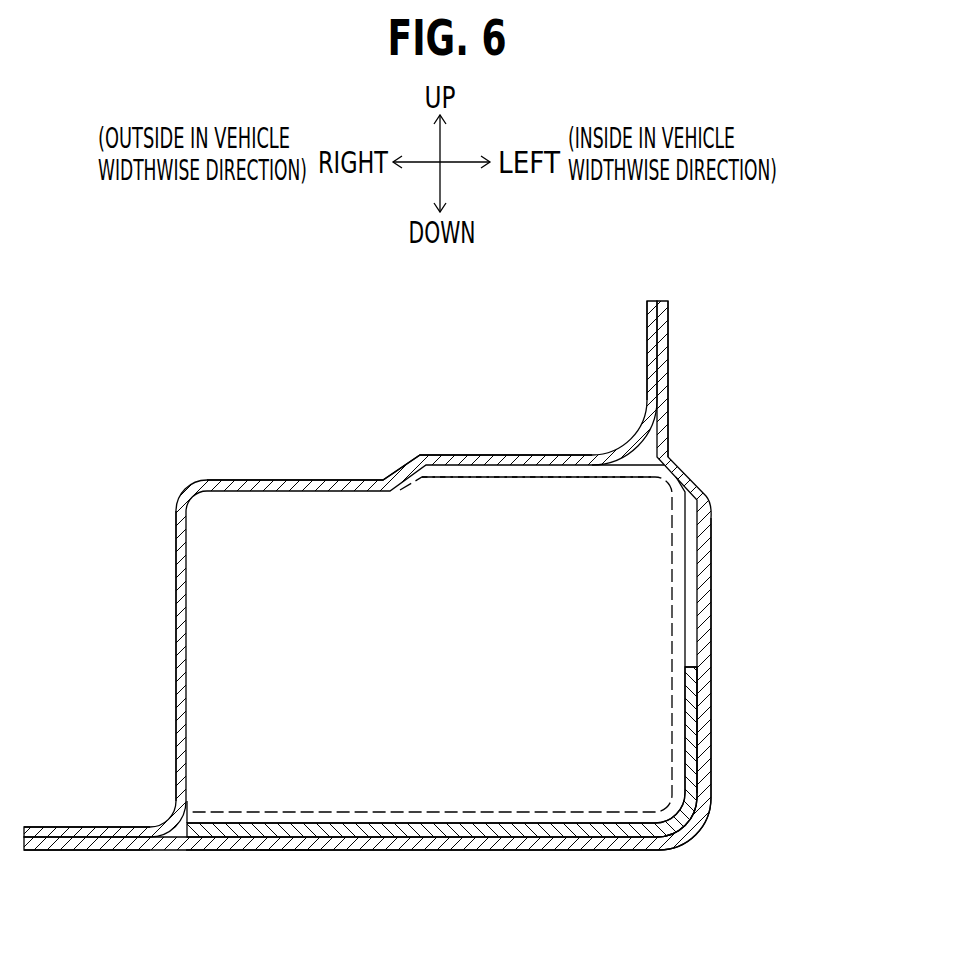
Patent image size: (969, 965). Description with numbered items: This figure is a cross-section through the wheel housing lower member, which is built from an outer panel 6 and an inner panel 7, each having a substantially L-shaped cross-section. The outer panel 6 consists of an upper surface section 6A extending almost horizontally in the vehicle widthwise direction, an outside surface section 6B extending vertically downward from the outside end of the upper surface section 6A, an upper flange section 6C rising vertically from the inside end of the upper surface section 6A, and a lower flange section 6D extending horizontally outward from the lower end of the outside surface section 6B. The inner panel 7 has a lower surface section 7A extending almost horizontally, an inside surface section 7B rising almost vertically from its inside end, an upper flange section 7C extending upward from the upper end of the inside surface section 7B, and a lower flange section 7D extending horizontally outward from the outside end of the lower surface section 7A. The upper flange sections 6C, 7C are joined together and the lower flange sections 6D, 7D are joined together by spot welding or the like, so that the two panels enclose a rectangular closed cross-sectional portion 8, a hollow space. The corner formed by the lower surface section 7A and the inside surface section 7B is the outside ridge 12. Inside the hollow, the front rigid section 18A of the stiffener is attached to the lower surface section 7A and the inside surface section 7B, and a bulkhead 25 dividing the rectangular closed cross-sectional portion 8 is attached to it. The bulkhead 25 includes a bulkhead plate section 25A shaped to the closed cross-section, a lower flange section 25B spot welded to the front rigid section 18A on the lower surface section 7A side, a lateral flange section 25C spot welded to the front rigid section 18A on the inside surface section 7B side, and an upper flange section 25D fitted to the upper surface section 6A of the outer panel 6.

The outer panel 6 is at (238, 420).
The upper surface section 6A is at (512, 455).
The outside surface section 6B is at (176, 605).
The upper flange section 6C is at (647, 333).
The lower flange section 6D is at (88, 827).
The inner panel 7 is at (745, 283).
The lower surface section 7A is at (388, 850).
The inside surface section 7B is at (711, 567).
The upper flange section 7C is at (668, 355).
The lower flange section 7D is at (88, 852).
The rectangular closed cross-sectional portion 8 is at (428, 674).
The outside ridge 12 is at (702, 848).
The front rigid section 18A is at (287, 840).
The bulkhead 25 is at (640, 723).
The bulkhead plate section 25A is at (637, 685).
The lower flange section 25B is at (575, 800).
The lateral flange section 25C is at (667, 788).
The upper flange section 25D is at (578, 491).